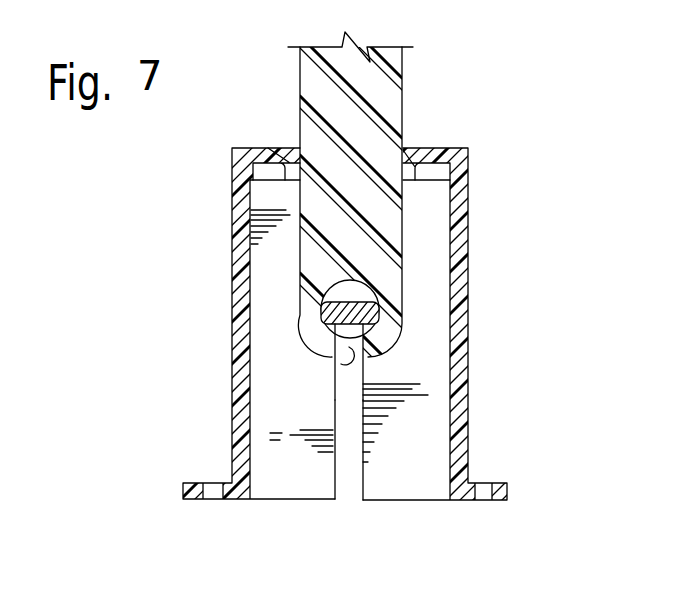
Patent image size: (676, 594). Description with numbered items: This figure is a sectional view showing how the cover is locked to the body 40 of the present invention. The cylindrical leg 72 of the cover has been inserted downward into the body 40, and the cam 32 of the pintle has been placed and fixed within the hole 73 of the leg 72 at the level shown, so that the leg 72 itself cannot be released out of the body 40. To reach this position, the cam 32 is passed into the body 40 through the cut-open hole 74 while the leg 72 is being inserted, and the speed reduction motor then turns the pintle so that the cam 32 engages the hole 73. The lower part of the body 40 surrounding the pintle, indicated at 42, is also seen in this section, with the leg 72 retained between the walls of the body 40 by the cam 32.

The leg 72 is at (400, 100).
The hole 73 is at (372, 293).
The body 40 is at (471, 322).
The cam 32 is at (379, 322).
The cut-open hole 74 is at (340, 357).
The shaft 42 is at (350, 486).